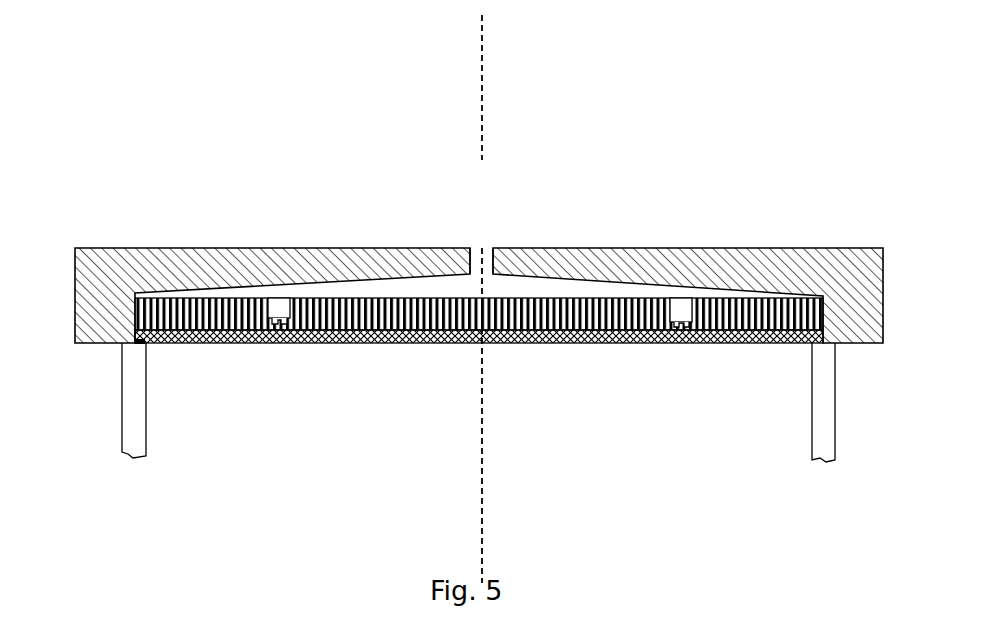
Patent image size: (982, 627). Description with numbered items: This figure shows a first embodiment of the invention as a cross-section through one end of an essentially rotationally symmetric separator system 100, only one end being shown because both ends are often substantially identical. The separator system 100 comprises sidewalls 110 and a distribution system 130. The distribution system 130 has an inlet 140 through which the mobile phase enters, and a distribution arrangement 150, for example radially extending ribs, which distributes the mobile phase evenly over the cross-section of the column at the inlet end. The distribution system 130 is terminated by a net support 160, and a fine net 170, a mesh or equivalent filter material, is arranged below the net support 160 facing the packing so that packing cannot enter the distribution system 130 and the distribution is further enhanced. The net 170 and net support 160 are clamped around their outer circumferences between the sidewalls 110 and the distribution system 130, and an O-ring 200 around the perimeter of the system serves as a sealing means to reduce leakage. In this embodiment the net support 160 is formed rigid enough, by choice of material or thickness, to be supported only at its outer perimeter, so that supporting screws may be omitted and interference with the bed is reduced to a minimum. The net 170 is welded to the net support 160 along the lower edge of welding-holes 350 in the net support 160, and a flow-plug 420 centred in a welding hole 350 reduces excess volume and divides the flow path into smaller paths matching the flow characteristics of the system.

The separator system 100 is at (134, 64).
The sidewalls 110 is at (128, 410).
The distribution system 130 is at (252, 170).
The inlet 140 is at (482, 236).
The distribution arrangement 150 is at (363, 286).
The net support 160 is at (548, 320).
The net 170 is at (448, 345).
The O-ring 200 is at (145, 343).
The welding-holes 350 is at (681, 305).
The flow-plug 420 is at (681, 310).